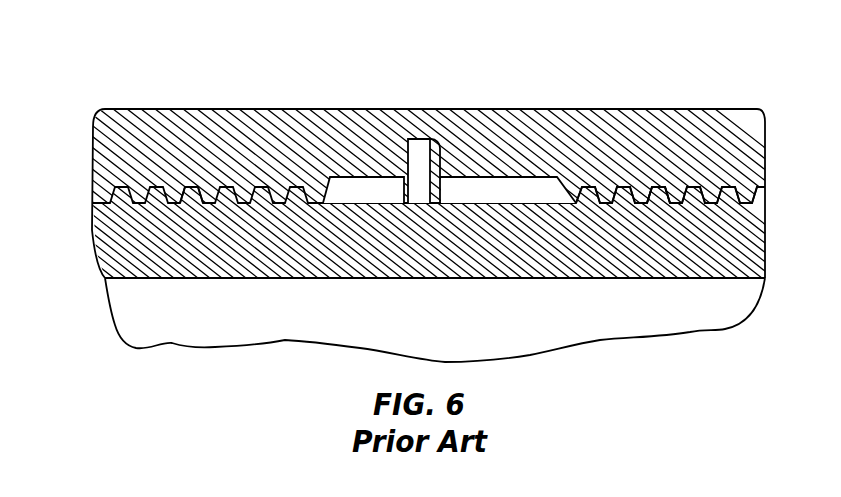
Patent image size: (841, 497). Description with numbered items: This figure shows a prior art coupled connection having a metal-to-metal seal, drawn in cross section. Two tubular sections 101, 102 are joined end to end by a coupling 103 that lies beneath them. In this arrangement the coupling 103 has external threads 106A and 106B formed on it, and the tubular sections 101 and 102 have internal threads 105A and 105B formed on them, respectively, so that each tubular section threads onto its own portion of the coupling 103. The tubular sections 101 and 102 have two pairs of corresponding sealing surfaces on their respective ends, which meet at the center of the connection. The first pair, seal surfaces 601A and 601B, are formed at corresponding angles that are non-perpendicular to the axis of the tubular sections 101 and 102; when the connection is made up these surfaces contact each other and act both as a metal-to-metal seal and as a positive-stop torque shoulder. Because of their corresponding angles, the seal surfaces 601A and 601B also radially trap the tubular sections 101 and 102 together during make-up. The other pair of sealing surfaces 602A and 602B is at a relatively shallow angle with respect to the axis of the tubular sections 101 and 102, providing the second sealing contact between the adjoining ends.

The tubular section 101 is at (147, 108).
The tubular section 102 is at (735, 109).
The coupling 103 is at (425, 281).
The internal threads 105A is at (210, 190).
The internal threads 105B is at (677, 198).
The external threads 106A is at (193, 200).
The external threads 106B is at (664, 206).
The seal surface 601A is at (484, 153).
The seal surface 601B is at (476, 124).
The sealing surface 602A is at (488, 140).
The sealing surface 602B is at (490, 138).